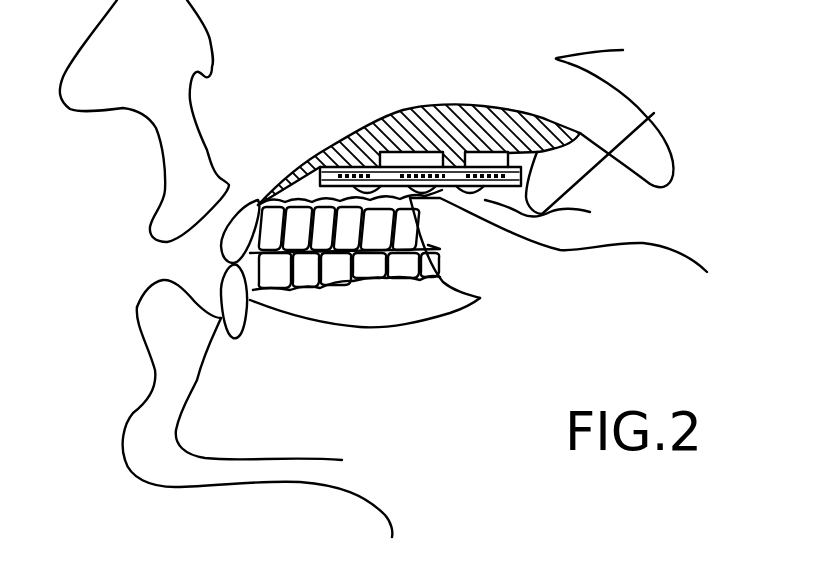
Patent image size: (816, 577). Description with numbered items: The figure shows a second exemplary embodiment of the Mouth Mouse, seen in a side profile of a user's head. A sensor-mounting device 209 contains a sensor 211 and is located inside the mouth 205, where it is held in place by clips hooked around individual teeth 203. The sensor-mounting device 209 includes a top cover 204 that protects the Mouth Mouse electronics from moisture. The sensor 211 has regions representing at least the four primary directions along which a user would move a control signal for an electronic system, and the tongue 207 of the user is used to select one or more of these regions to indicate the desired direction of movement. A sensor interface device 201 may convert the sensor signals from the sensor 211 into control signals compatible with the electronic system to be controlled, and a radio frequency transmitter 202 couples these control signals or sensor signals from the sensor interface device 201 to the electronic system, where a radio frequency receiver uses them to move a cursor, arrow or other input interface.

The sensor interface device 201 is at (537, 152).
The radio frequency transmitter 202 is at (383, 156).
The teeth 203 is at (220, 250).
The top cover 204 is at (654, 113).
The mouth 205 is at (387, 330).
The tongue 207 is at (440, 268).
The sensor-mounting device 209 is at (590, 212).
The sensor 211 is at (478, 188).